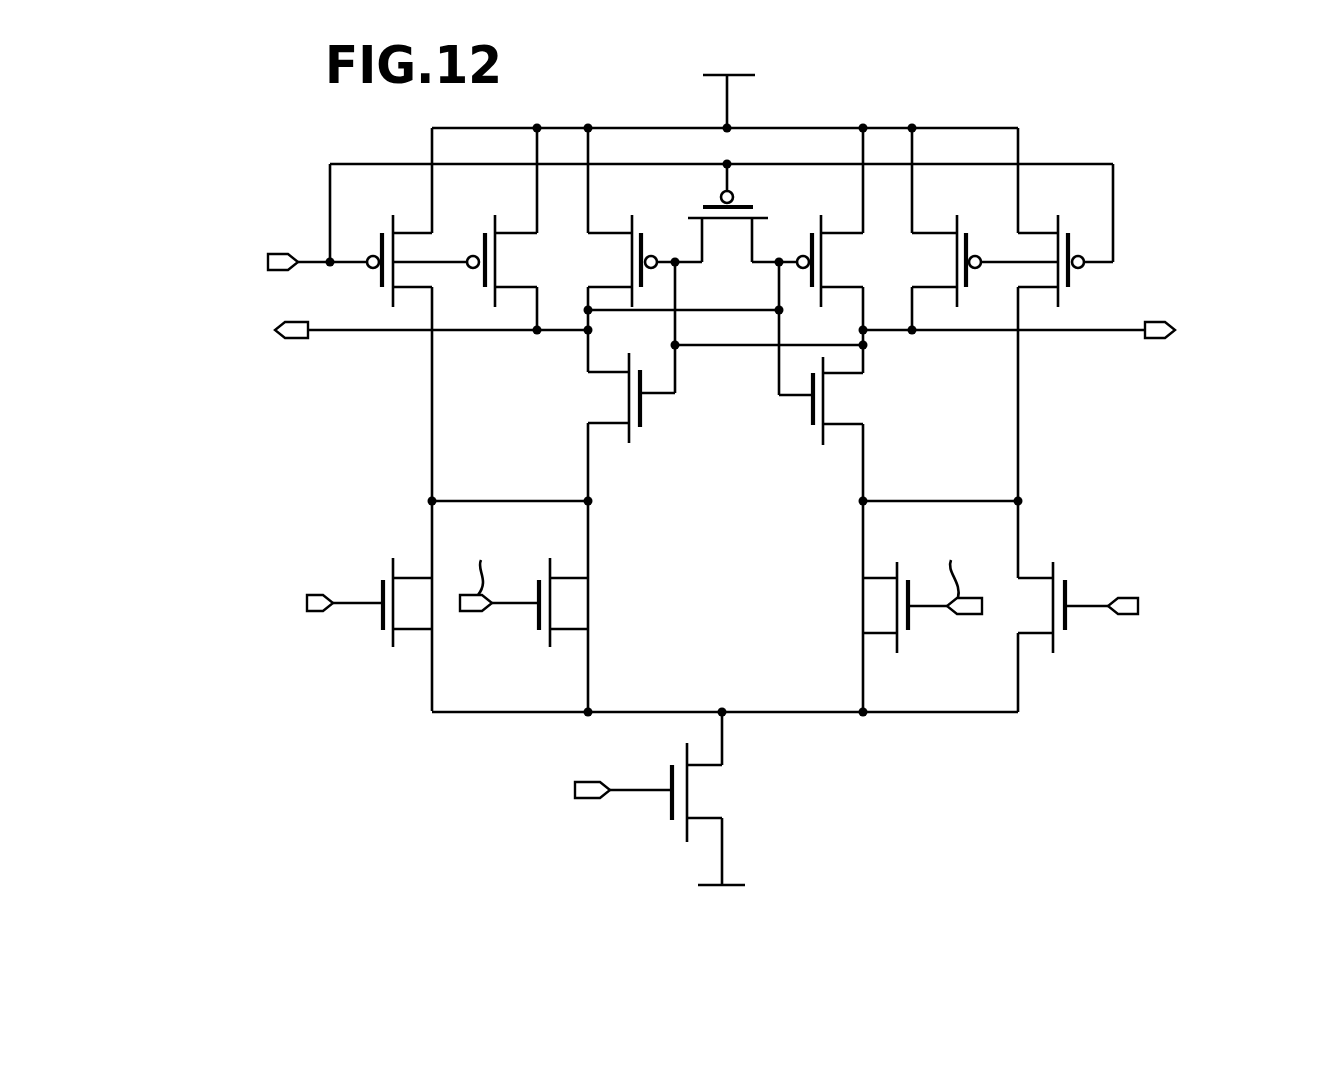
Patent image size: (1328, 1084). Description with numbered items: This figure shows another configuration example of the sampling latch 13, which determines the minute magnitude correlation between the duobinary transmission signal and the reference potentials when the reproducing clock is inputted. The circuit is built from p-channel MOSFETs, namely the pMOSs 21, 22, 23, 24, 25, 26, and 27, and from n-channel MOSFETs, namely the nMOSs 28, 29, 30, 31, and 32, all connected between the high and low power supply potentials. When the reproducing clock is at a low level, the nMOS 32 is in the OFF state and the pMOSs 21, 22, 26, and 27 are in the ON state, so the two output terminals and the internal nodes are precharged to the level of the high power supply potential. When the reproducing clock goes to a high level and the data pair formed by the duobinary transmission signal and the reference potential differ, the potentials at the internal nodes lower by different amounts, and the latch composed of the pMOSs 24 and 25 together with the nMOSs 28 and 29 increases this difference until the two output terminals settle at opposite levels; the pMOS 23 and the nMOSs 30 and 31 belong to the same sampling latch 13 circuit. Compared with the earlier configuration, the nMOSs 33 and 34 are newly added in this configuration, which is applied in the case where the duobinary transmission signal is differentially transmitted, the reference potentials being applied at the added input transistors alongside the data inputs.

The sampling latch 13 is at (904, 97).
The pMOS 21 is at (431, 248).
The pMOS 22 is at (520, 267).
The pMOS 23 is at (598, 250).
The pMOS 24 is at (727, 243).
The pMOS 25 is at (838, 252).
The pMOS 26 is at (933, 270).
The pMOS 27 is at (1030, 250).
The nMOS 28 is at (608, 395).
The nMOS 29 is at (848, 398).
The nMOS 30 is at (575, 610).
The nMOS 31 is at (1022, 605).
The nMOS 32 is at (722, 790).
The nMOS 33 is at (420, 610).
The nMOS 34 is at (865, 598).